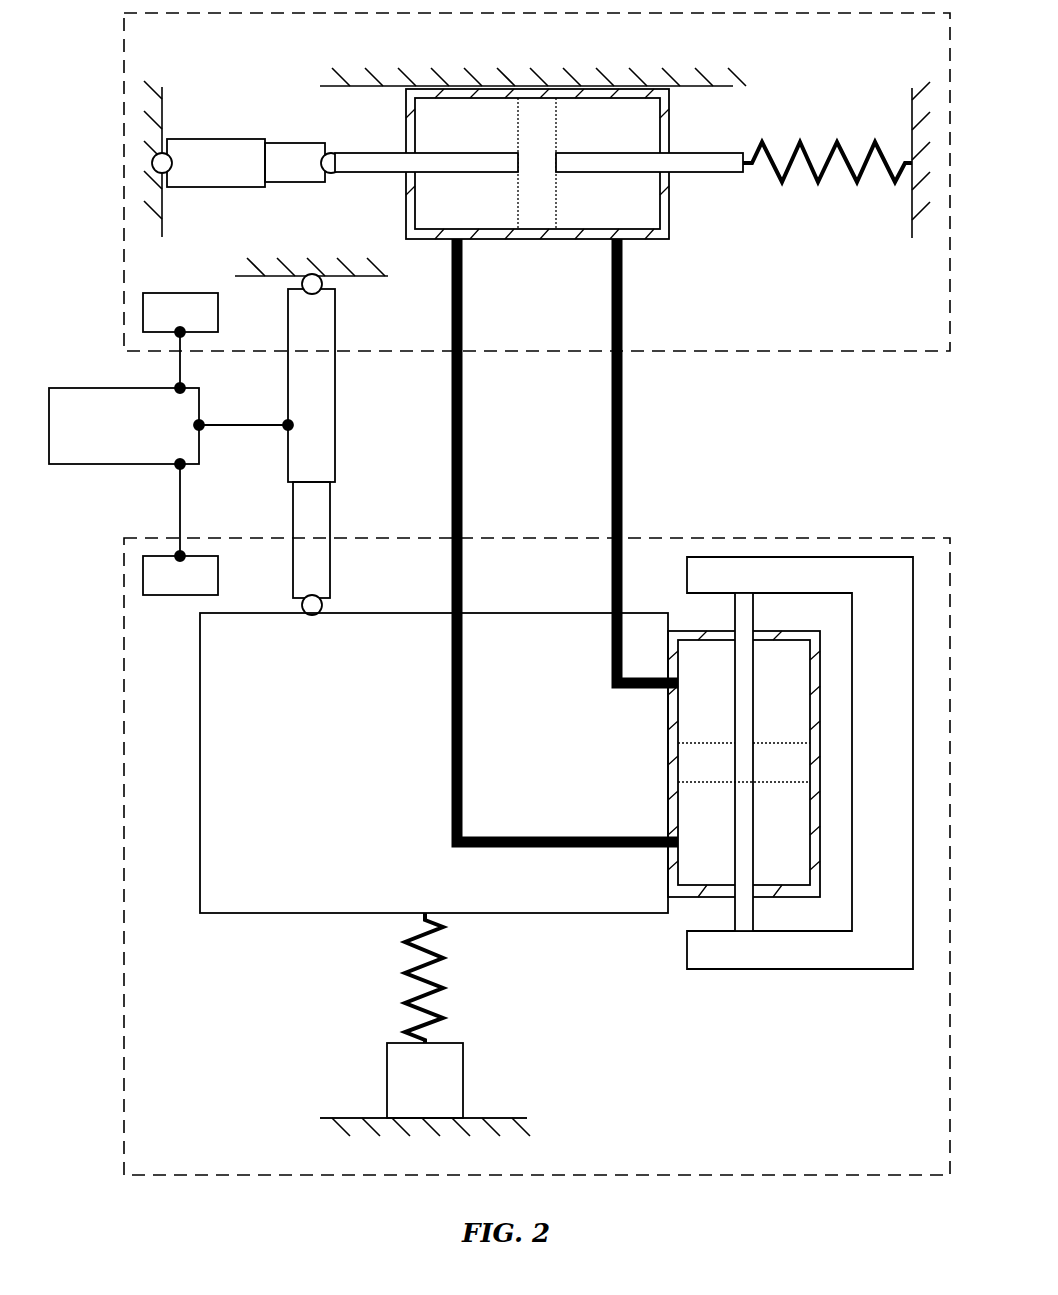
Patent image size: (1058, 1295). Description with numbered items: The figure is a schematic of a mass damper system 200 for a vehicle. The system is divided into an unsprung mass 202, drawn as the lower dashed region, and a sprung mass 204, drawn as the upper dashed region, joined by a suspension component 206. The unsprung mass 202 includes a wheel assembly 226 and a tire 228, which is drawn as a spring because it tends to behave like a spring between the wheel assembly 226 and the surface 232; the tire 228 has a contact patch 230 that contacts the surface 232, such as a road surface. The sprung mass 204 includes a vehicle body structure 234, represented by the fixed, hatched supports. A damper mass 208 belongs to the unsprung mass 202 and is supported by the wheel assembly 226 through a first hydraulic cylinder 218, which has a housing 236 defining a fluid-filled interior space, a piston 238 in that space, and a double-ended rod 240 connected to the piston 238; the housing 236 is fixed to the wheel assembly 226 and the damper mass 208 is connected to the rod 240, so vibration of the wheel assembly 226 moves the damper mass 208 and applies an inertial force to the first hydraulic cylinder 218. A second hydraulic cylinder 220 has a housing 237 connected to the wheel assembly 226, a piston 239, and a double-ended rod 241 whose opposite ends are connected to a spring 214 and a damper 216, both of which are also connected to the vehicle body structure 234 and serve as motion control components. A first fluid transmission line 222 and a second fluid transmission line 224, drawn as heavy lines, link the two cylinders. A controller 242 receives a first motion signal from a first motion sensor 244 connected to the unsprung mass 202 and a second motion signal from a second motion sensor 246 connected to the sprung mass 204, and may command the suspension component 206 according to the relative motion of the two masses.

The mass damper system 200 is at (108, 60).
The unsprung mass 202 is at (124, 610).
The sprung mass 204 is at (124, 143).
The suspension component 206 is at (335, 388).
The damper mass 208 is at (873, 557).
The spring 214 is at (800, 142).
The damper 216 is at (235, 139).
The first hydraulic cylinder 218 is at (744, 715).
The second hydraulic cylinder 220 is at (523, 164).
The first fluid transmission line 222 is at (623, 385).
The second fluid transmission line 224 is at (463, 385).
The wheel assembly 226 is at (200, 722).
The tire 228 is at (443, 985).
The contact patch 230 is at (463, 1080).
The surface 232 is at (350, 1118).
The vehicle body structure 234 is at (358, 88).
The housing 236 is at (810, 688).
The housing 237 is at (669, 115).
The piston 238 is at (707, 786).
The piston 239 is at (556, 112).
The rod 240 is at (735, 658).
The rod 241 is at (458, 175).
The controller 242 is at (171, 444).
The first motion sensor 244 is at (180, 575).
The second motion sensor 246 is at (180, 312).